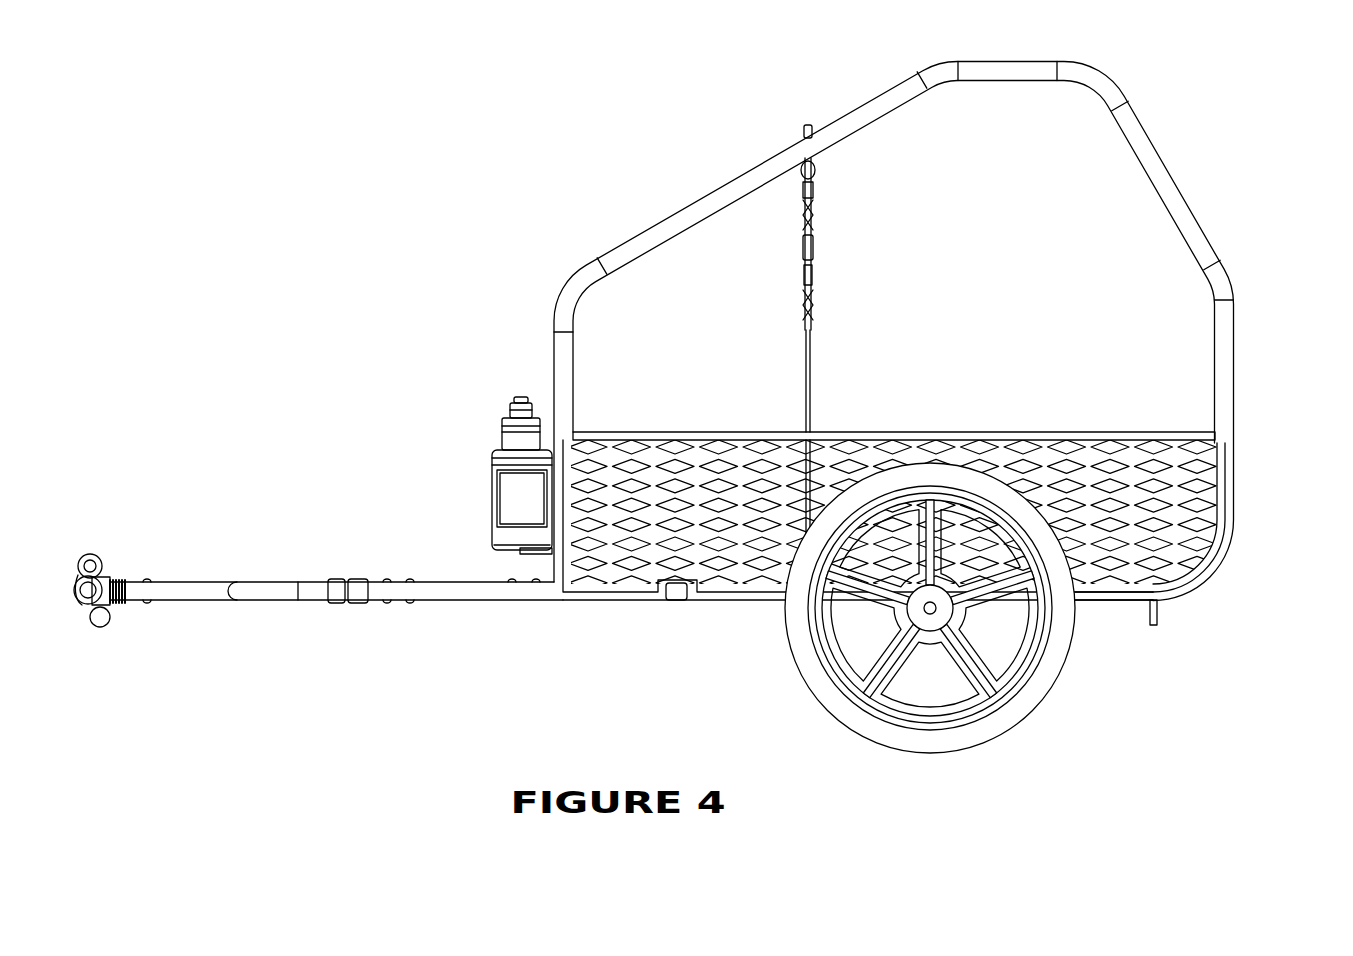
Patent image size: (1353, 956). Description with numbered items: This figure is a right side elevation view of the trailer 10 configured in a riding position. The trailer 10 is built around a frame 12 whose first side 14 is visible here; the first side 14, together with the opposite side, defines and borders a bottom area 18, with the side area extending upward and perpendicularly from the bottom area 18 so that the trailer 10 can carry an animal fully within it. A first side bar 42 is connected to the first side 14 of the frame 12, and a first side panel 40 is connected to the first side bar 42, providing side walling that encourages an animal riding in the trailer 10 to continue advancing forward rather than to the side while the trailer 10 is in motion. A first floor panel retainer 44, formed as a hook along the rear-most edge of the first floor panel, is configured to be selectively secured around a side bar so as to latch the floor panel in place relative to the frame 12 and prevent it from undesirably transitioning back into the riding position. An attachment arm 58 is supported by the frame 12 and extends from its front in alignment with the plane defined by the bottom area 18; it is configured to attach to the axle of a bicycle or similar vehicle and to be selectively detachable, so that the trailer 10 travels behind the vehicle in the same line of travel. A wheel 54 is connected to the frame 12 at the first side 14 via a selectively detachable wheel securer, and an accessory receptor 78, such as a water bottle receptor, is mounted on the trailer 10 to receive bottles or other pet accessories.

The trailer 10 is at (331, 169).
The frame 12 is at (1226, 345).
The first side 14 is at (1097, 600).
The bottom area 18 is at (1192, 638).
The first side panel 40 is at (613, 550).
The first side bar 42 is at (1066, 444).
The first floor panel retainer 44 is at (1153, 626).
The wheel 54 is at (809, 657).
The attachment arm 58 is at (284, 592).
The accessory receptor 78 is at (492, 457).